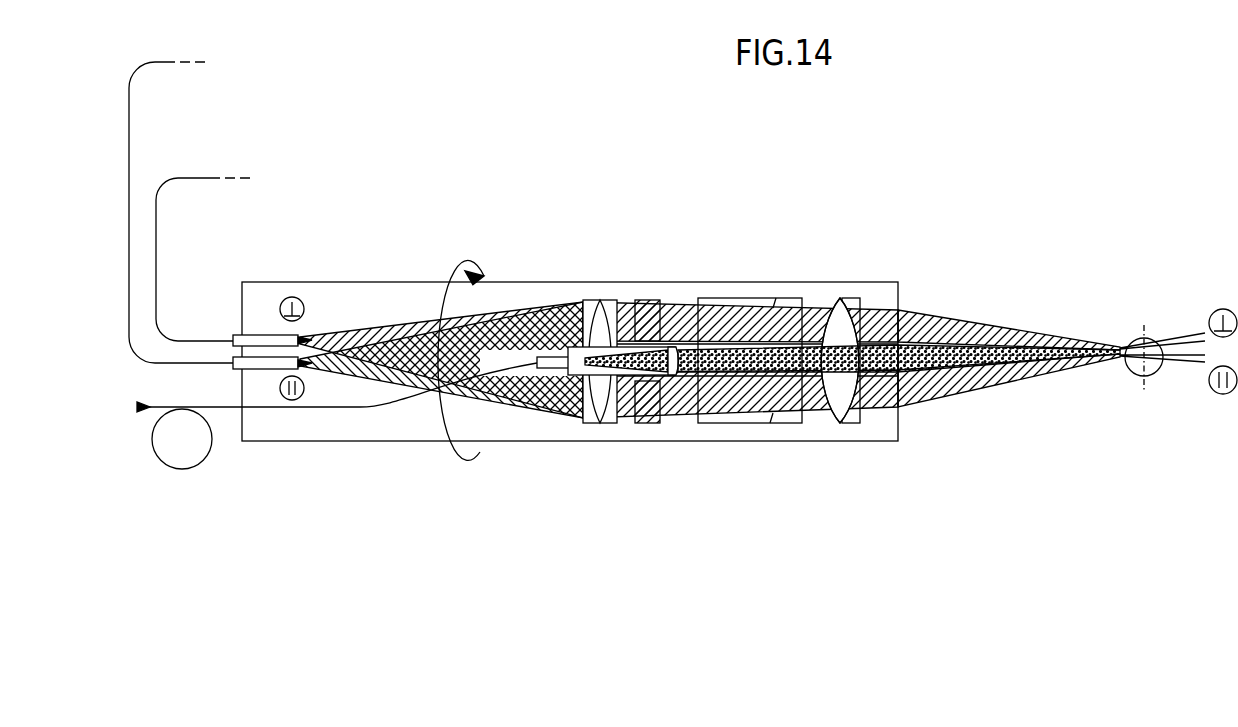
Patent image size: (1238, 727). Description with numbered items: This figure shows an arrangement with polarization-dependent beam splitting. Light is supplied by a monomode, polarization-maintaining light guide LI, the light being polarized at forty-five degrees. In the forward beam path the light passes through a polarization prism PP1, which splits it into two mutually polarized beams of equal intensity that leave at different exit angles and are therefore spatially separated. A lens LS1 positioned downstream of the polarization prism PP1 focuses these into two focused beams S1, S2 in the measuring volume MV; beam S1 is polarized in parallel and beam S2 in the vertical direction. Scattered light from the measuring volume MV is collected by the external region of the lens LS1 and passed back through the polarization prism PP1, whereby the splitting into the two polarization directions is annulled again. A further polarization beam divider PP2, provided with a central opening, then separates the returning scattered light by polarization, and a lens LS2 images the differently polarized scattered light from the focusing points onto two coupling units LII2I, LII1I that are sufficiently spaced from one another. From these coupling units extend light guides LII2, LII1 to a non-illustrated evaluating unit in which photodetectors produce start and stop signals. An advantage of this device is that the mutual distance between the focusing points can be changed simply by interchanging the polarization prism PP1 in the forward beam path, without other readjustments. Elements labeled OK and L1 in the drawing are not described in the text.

The light guide LII1 is at (129, 136).
The light guide LII2 is at (156, 210).
The coupling unit LII2I is at (258, 338).
The coupling unit LII1I is at (240, 366).
The light guide LI is at (363, 408).
The lens LS2 is at (600, 310).
The polarization beam divider PP2 is at (645, 305).
The optical body / objective OK is at (706, 290).
The polarization prism PP1 is at (773, 308).
The lens LS1 is at (832, 305).
The lens of first channel L1 is at (679, 375).
The focused beam S2 is at (1022, 335).
The focused beam S1 is at (1018, 376).
The measuring volume MV is at (1150, 340).